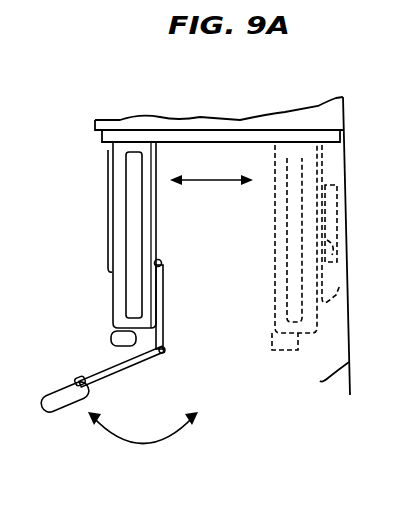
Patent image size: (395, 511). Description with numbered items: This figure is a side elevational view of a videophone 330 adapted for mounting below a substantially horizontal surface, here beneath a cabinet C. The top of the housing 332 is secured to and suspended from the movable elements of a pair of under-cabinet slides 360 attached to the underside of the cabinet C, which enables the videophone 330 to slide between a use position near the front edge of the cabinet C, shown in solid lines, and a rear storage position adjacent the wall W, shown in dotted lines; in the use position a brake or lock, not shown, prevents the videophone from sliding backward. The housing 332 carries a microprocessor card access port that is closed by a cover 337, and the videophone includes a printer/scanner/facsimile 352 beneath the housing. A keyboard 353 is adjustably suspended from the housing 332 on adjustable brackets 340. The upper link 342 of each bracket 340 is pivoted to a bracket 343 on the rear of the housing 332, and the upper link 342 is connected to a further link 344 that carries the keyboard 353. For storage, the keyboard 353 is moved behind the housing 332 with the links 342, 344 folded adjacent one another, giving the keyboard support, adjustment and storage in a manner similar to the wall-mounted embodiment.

The cabinet C is at (122, 120).
The wall W is at (327, 246).
The under-cabinet slides 360 is at (199, 132).
The videophone 330 is at (98, 196).
The housing 332 is at (117, 164).
The cover 337 is at (128, 243).
The printer/scanner/facsimile 352 is at (112, 338).
The adjustable brackets 340 is at (178, 355).
The upper link 342 is at (165, 309).
The bracket 343 is at (159, 259).
The link 344 is at (110, 373).
The keyboard 353 is at (60, 397).